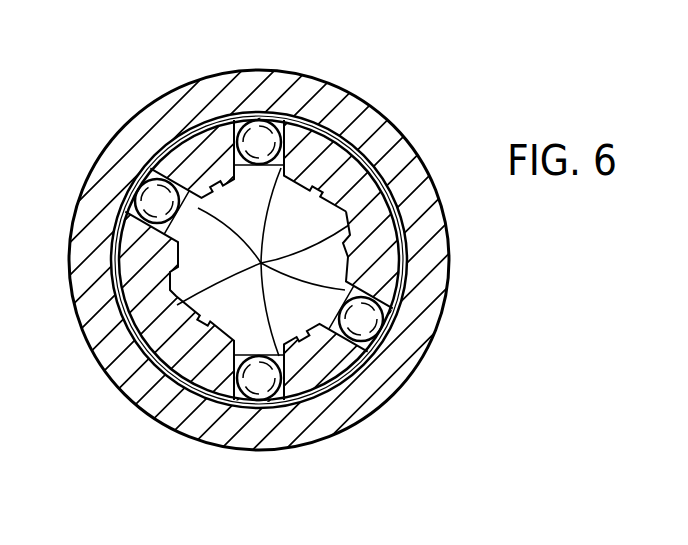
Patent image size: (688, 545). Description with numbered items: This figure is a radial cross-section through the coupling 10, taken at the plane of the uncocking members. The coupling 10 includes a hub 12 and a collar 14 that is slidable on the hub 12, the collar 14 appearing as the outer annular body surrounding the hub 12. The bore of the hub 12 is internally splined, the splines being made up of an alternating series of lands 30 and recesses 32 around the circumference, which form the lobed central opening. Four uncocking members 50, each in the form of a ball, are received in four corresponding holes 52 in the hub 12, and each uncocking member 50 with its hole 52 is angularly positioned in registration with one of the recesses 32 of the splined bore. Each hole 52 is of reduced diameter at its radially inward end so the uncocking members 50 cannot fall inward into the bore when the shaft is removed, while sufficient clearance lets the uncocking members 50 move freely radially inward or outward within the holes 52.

The coupling 10 is at (396, 62).
The hub 12 is at (400, 217).
The collar 14 is at (403, 130).
The lands 30 is at (226, 196).
The recesses 32 is at (250, 258).
The uncocking members 50 is at (247, 130).
The holes 52 is at (283, 138).